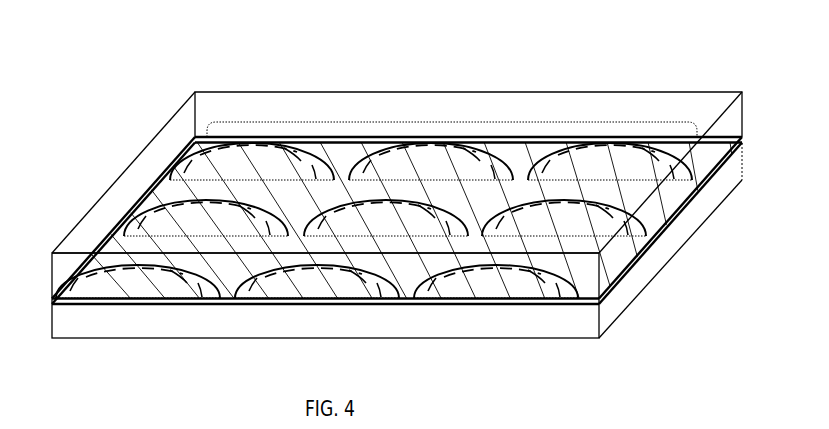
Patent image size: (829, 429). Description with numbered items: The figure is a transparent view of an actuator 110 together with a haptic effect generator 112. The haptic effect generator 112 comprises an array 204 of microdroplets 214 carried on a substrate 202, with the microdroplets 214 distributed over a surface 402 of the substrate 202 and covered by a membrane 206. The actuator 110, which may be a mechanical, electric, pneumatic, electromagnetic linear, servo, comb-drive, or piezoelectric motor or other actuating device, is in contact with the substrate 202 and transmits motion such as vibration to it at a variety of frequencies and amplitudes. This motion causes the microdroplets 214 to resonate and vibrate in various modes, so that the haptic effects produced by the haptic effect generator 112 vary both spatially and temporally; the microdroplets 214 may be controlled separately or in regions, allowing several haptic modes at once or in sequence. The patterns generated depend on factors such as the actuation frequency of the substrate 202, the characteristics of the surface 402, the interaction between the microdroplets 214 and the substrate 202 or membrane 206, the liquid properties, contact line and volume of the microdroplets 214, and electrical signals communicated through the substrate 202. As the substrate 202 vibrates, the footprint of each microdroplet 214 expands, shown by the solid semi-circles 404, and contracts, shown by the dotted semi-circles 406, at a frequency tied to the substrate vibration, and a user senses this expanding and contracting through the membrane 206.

The actuator 110 is at (344, 330).
The haptic effect generator 112 is at (147, 147).
The membrane 206 is at (118, 198).
The surface 402 is at (674, 199).
The substrate 202 is at (600, 300).
The array 204 is at (463, 121).
The microdroplets 214 is at (627, 167).
The dotted semi-circles 406 is at (270, 215).
The solid semi-circles 404 is at (195, 190).